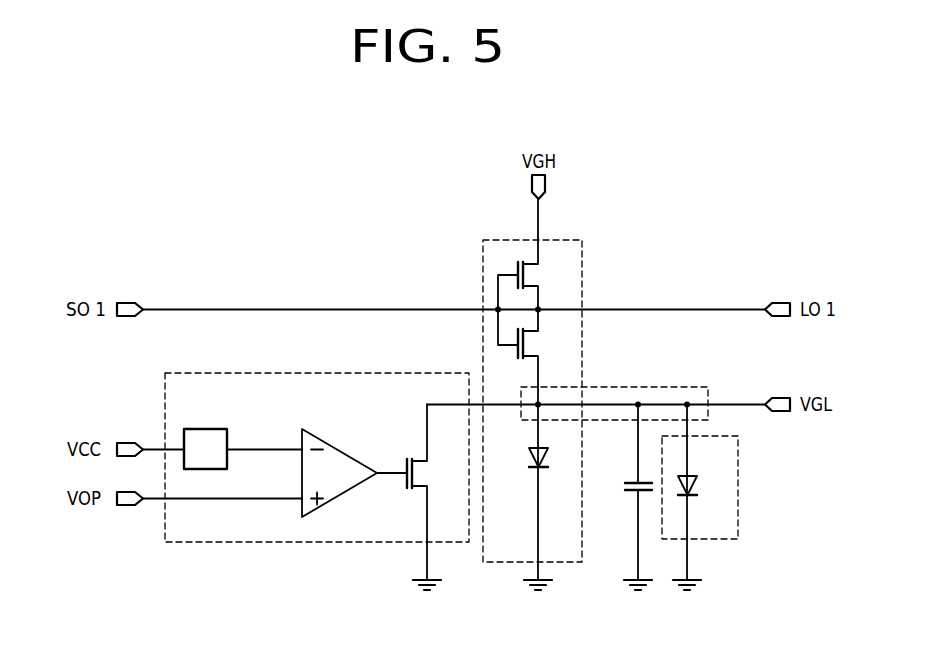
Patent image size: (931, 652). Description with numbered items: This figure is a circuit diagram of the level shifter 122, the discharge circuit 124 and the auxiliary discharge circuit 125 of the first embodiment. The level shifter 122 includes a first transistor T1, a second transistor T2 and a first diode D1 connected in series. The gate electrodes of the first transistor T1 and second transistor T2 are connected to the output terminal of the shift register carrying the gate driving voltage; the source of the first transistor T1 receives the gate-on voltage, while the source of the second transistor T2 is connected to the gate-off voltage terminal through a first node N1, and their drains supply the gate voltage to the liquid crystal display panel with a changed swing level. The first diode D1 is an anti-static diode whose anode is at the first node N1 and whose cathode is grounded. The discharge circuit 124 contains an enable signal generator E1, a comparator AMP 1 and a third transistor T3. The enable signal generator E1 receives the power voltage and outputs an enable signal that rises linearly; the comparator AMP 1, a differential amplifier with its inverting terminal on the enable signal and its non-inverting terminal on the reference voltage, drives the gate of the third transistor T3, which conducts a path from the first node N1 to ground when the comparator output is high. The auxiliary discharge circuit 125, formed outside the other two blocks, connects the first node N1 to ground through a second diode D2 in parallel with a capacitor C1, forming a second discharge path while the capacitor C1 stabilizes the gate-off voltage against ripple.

The level shifter 122 is at (495, 240).
The discharge circuit 124 is at (314, 373).
The auxiliary discharge circuit 125 is at (726, 498).
The first node N1 is at (617, 387).
The first transistor T1 is at (529, 254).
The second transistor T2 is at (529, 357).
The third transistor T3 is at (428, 498).
The first diode D1 is at (548, 498).
The second diode D2 is at (697, 498).
The capacitor C1 is at (624, 498).
The enable signal generator E1 is at (205, 429).
The comparator AMP 1 is at (342, 447).